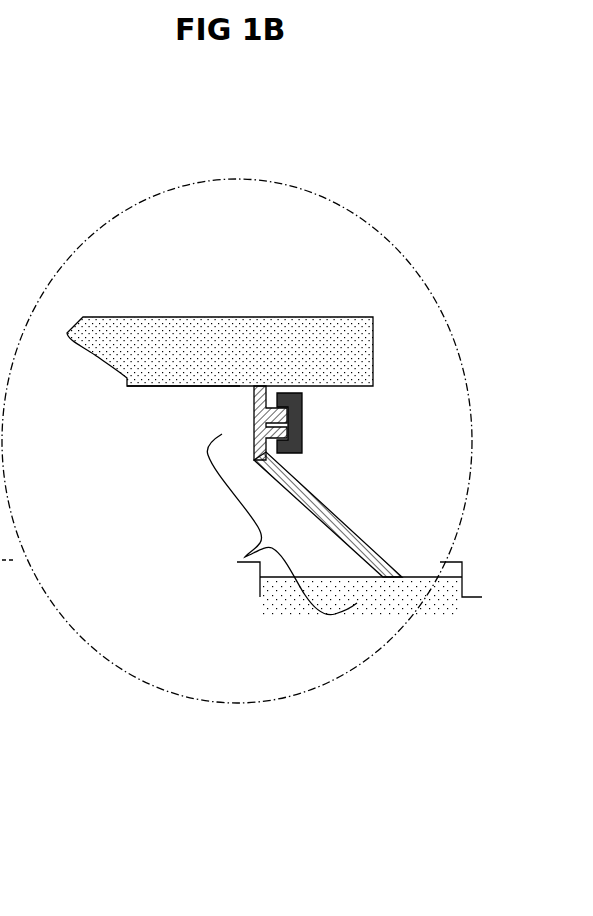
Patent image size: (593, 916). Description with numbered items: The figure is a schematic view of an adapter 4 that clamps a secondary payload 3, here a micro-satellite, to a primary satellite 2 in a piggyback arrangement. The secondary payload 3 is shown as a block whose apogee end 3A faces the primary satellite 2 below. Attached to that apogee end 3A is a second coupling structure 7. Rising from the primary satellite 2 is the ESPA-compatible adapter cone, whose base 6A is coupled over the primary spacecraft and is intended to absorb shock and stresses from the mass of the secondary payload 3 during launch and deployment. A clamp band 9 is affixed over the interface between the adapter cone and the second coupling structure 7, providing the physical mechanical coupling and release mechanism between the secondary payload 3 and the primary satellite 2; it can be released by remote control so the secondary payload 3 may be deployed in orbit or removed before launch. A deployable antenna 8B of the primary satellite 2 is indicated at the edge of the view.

The primary satellite 2 is at (359, 589).
The secondary payload 3 is at (220, 351).
The apogee end of the secondary payload 3A is at (133, 398).
The adapter 4 is at (270, 524).
The base of the cone 6A is at (315, 477).
The second coupling structure 7 is at (246, 409).
The deployable antenna 8B is at (0, 556).
The clamp band 9 is at (302, 420).